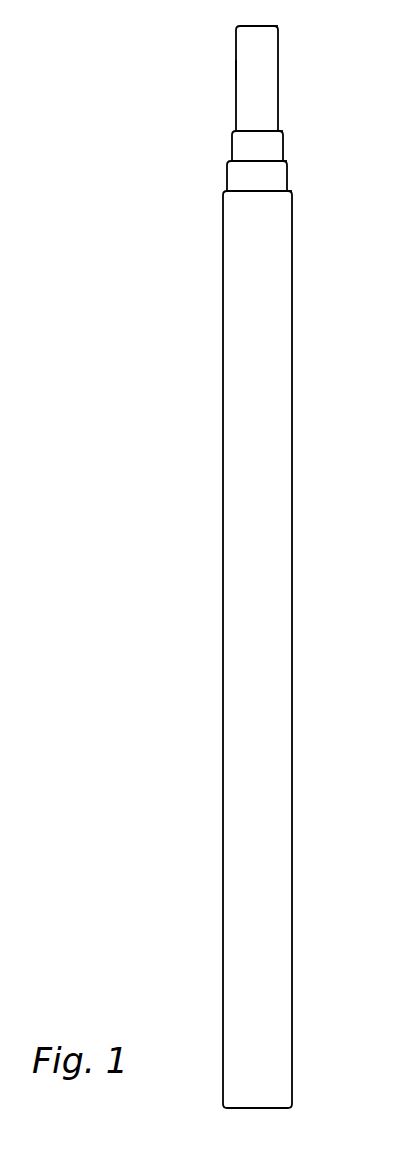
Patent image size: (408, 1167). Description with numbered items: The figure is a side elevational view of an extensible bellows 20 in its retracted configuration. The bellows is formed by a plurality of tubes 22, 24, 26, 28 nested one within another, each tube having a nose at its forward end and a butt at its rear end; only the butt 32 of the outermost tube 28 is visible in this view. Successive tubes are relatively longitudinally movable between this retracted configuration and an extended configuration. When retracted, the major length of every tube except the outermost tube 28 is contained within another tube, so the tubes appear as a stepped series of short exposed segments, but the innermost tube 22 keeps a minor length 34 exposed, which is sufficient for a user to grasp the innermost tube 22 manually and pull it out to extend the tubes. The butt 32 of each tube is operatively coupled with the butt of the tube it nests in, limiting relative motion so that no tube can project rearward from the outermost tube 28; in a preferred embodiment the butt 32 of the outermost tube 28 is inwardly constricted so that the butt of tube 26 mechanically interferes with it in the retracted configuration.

The extensible bellows 20 is at (404, 692).
The innermost tube 22 is at (236, 119).
The tube 24 is at (232, 150).
The tube 26 is at (227, 181).
The outermost tube 28 is at (223, 221).
The butt 32 is at (288, 1108).
The minor length 34 is at (236, 70).